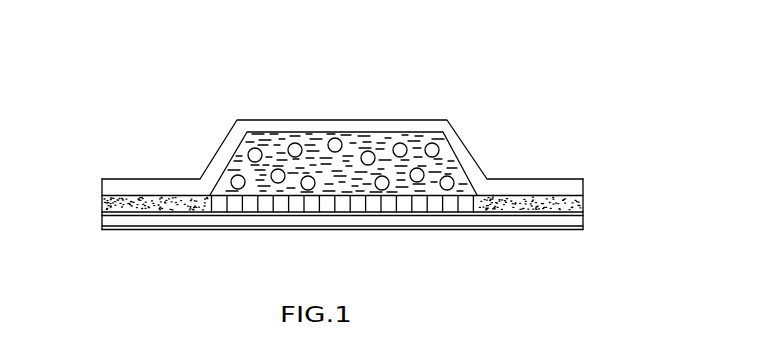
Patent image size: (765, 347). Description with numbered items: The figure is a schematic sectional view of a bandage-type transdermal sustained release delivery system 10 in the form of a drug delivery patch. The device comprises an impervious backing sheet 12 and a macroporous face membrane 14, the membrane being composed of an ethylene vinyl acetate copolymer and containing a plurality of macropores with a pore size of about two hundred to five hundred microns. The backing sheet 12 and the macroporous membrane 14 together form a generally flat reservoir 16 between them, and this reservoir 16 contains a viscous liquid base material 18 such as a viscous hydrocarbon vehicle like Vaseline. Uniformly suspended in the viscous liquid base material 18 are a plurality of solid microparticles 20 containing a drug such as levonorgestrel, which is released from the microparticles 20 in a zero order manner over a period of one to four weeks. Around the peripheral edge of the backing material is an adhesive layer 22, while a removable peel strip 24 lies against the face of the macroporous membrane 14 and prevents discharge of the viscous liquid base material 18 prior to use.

The transdermal sustained release delivery system 10 is at (141, 55).
The impervious backing sheet 12 is at (239, 119).
The macroporous face membrane 14 is at (430, 208).
The reservoir 16 is at (346, 163).
The viscous liquid base material 18 is at (452, 162).
The solid microparticles 20 is at (432, 143).
The adhesive layer 22 is at (104, 205).
The removable peel strip 24 is at (105, 221).